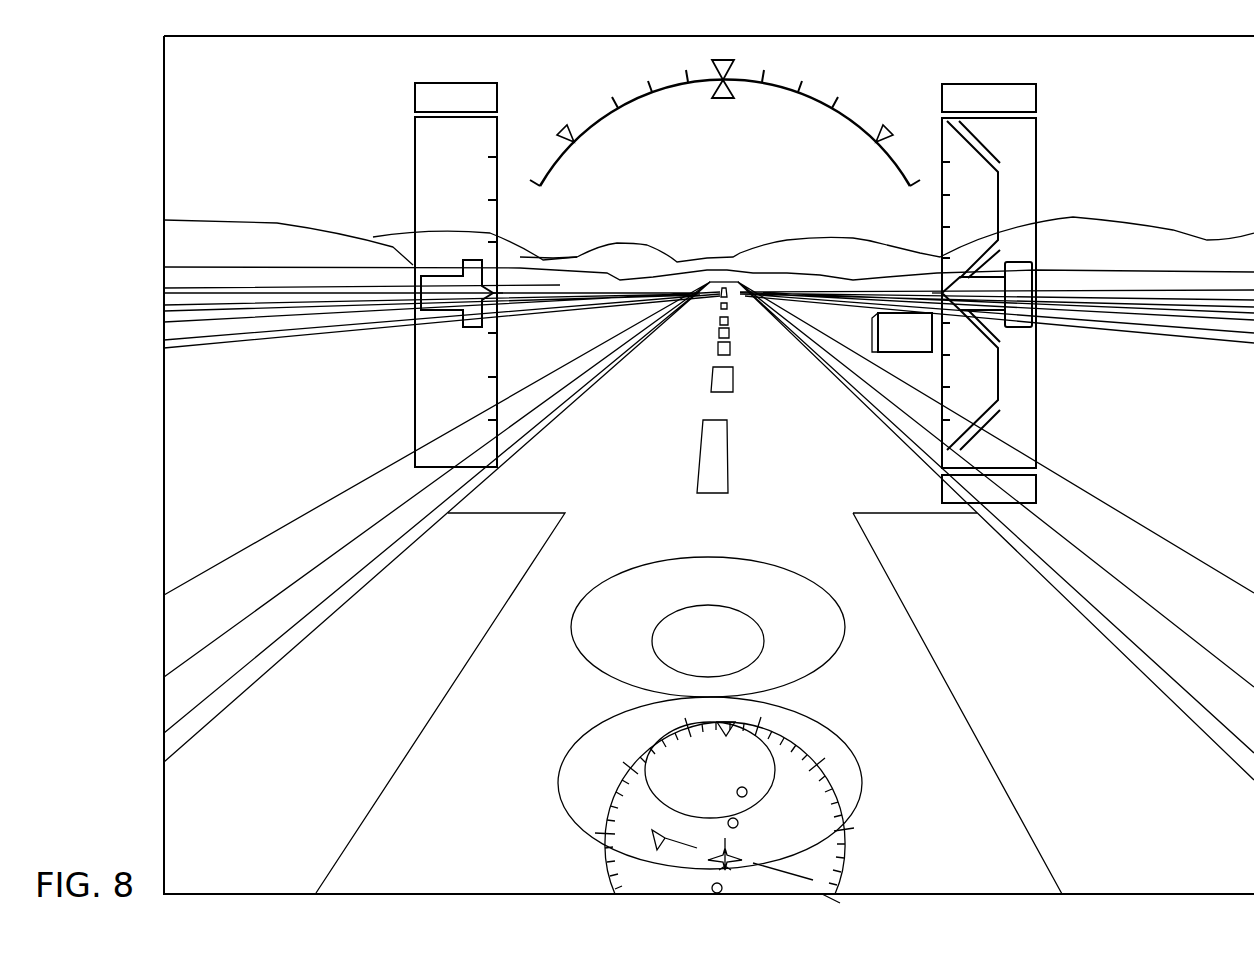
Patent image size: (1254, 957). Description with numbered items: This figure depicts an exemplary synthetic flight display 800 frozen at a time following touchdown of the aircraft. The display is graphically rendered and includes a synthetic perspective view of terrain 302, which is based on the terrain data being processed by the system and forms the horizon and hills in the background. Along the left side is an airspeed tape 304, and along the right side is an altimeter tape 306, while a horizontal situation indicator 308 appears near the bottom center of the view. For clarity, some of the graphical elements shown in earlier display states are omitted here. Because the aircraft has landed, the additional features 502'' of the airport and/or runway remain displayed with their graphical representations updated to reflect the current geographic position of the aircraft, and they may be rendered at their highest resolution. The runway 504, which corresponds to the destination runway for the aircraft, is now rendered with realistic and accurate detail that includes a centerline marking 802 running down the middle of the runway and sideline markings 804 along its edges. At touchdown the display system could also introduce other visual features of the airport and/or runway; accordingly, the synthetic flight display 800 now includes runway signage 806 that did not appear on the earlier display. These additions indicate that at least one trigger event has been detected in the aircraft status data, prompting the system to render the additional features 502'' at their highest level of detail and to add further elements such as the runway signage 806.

The synthetic flight display 800 is at (135, 161).
The terrain 302 is at (1152, 227).
The airspeed tape 304 is at (415, 172).
The altimeter tape 306 is at (1036, 172).
The horizontal situation indicator 308 is at (848, 840).
The additional features 502'' is at (999, 343).
The runway 504 is at (597, 403).
The centerline marking 802 is at (728, 440).
The sideline markings 804 is at (523, 432).
The runway signage 806 is at (898, 313).